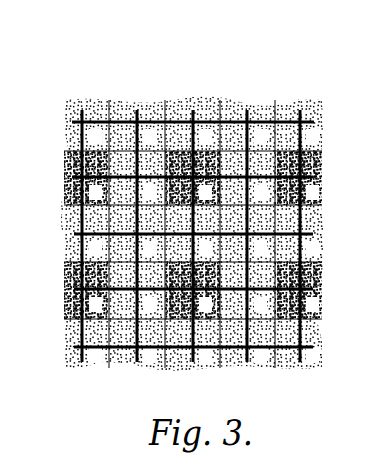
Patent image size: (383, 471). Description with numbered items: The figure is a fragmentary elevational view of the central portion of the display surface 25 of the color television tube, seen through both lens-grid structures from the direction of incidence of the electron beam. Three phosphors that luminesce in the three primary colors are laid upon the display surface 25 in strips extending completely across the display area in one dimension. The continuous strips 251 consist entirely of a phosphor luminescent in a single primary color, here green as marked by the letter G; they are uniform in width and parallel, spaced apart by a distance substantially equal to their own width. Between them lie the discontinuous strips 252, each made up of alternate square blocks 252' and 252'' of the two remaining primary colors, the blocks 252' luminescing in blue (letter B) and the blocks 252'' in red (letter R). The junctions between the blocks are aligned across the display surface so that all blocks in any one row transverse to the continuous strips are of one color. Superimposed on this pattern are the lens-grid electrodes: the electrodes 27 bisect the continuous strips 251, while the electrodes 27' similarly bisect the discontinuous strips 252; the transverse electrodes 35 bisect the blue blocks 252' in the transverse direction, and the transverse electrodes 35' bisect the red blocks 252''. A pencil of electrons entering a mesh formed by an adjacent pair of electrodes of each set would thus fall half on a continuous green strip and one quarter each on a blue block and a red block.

The display surface 25 is at (193, 219).
The continuous strips 251 is at (118, 106).
The discontinuous strips 252 is at (193, 193).
The blocks luminescent in blue 252' is at (168, 235).
The blocks luminescent in red 252'' is at (168, 237).
The transverse electrodes 35 is at (209, 215).
The transverse electrodes 35' is at (211, 217).
The electrodes 27 is at (162, 253).
The electrodes 27' is at (160, 253).